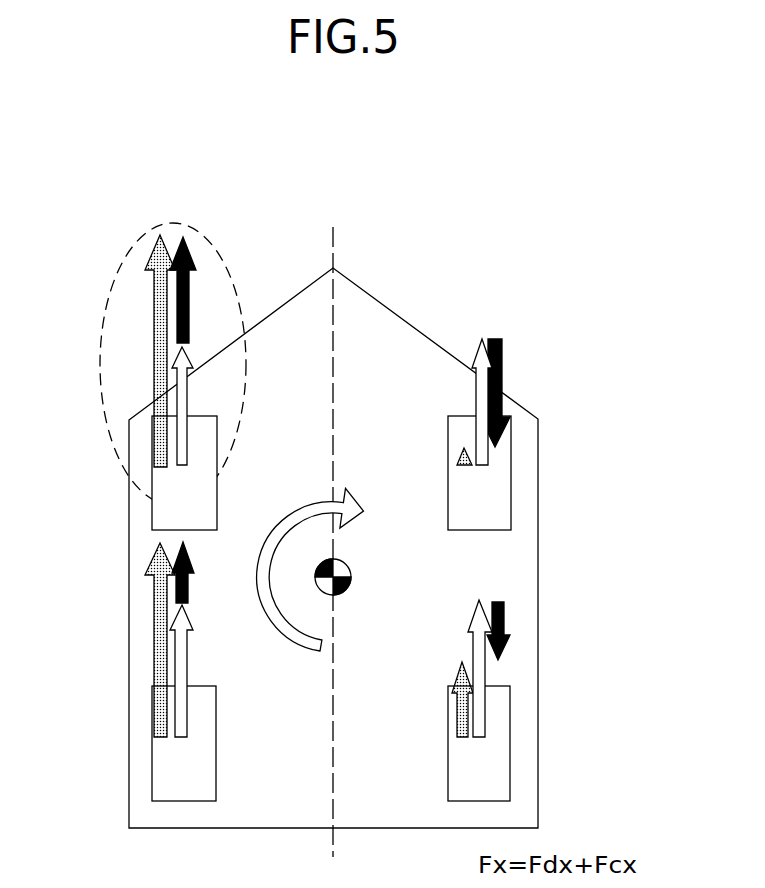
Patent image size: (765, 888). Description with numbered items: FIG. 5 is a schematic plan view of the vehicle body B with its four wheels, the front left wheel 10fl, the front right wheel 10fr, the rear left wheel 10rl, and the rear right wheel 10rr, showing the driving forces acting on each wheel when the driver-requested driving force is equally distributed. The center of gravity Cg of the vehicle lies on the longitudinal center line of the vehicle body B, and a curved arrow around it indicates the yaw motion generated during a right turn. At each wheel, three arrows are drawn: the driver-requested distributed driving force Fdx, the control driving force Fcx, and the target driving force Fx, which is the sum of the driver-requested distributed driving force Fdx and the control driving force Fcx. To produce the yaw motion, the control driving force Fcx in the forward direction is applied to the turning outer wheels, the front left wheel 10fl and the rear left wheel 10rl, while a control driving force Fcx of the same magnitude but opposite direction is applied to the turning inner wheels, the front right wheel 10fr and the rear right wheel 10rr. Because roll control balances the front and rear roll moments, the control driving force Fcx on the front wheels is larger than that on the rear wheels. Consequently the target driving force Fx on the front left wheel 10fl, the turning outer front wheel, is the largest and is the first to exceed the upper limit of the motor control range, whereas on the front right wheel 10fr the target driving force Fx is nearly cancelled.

The front left wheel 10fl is at (152, 521).
The front right wheel 10fr is at (511, 513).
The rear left wheel 10rl is at (152, 786).
The rear right wheel 10rr is at (510, 778).
The vehicle body B is at (538, 567).
The center of gravity Cg is at (351, 572).
The target driving force Fx is at (153, 342).
The driver-requested distributed driving force Fdx is at (194, 397).
The control driving force Fcx is at (196, 297).